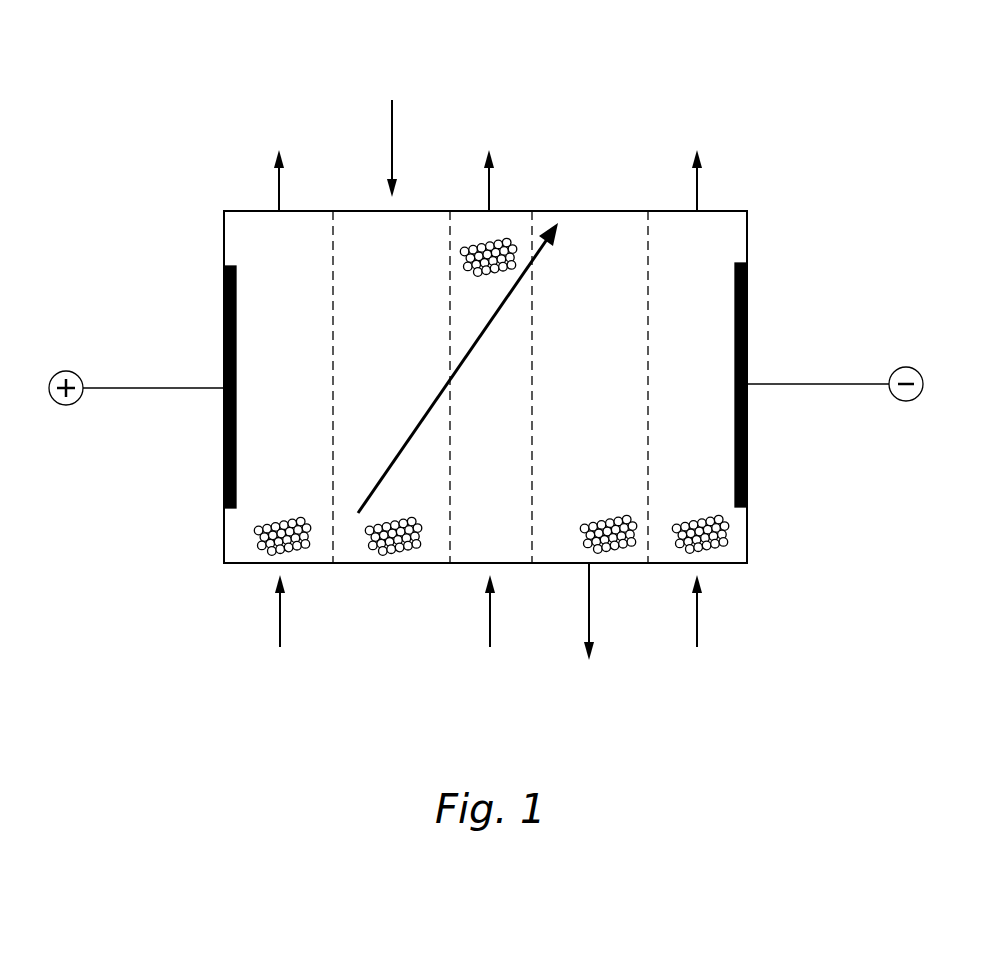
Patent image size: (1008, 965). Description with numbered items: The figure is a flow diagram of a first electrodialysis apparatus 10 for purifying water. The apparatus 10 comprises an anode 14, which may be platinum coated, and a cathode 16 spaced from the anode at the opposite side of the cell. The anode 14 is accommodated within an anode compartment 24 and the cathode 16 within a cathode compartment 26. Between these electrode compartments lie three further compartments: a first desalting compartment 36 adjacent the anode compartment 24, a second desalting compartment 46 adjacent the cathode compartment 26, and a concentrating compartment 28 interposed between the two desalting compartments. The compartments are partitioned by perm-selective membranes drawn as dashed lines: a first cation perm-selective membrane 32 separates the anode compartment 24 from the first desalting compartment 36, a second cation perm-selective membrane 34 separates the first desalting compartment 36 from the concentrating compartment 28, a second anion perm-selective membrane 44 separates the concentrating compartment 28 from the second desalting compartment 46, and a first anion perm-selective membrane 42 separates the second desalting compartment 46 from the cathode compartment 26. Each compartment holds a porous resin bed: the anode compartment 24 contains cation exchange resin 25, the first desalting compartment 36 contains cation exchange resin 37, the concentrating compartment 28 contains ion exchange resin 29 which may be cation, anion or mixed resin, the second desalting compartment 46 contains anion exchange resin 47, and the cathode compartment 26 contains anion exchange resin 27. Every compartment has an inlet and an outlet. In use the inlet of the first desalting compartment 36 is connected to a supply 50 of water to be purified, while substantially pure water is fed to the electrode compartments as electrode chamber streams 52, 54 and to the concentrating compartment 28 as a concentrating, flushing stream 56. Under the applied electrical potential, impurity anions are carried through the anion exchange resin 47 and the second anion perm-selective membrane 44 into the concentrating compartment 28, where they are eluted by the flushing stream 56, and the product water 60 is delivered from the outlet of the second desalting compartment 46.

The electrodialysis apparatus 10 is at (755, 225).
The anode 14 is at (227, 477).
The cathode 16 is at (747, 353).
The anode compartment 24 is at (266, 384).
The first desalting compartment 36 is at (376, 384).
The concentrating compartment 28 is at (475, 384).
The second desalting compartment 46 is at (574, 384).
The cathode compartment 26 is at (674, 384).
The first cation perm-selective membrane 32 is at (333, 530).
The second cation perm-selective membrane 34 is at (450, 530).
The second anion perm-selective membrane 44 is at (532, 530).
The first anion perm-selective membrane 42 is at (650, 525).
The cation exchange resin 25 is at (265, 543).
The cation exchange resin 37 is at (396, 550).
The ion exchange resin 29 is at (495, 242).
The anion exchange resin 47 is at (608, 552).
The anion exchange resin 27 is at (722, 530).
The supply of water to be purified 50 is at (392, 148).
The electrode chamber stream 52 is at (280, 620).
The concentrating, flushing stream 56 is at (490, 613).
The electrode chamber stream 54 is at (697, 605).
The product water 60 is at (589, 627).